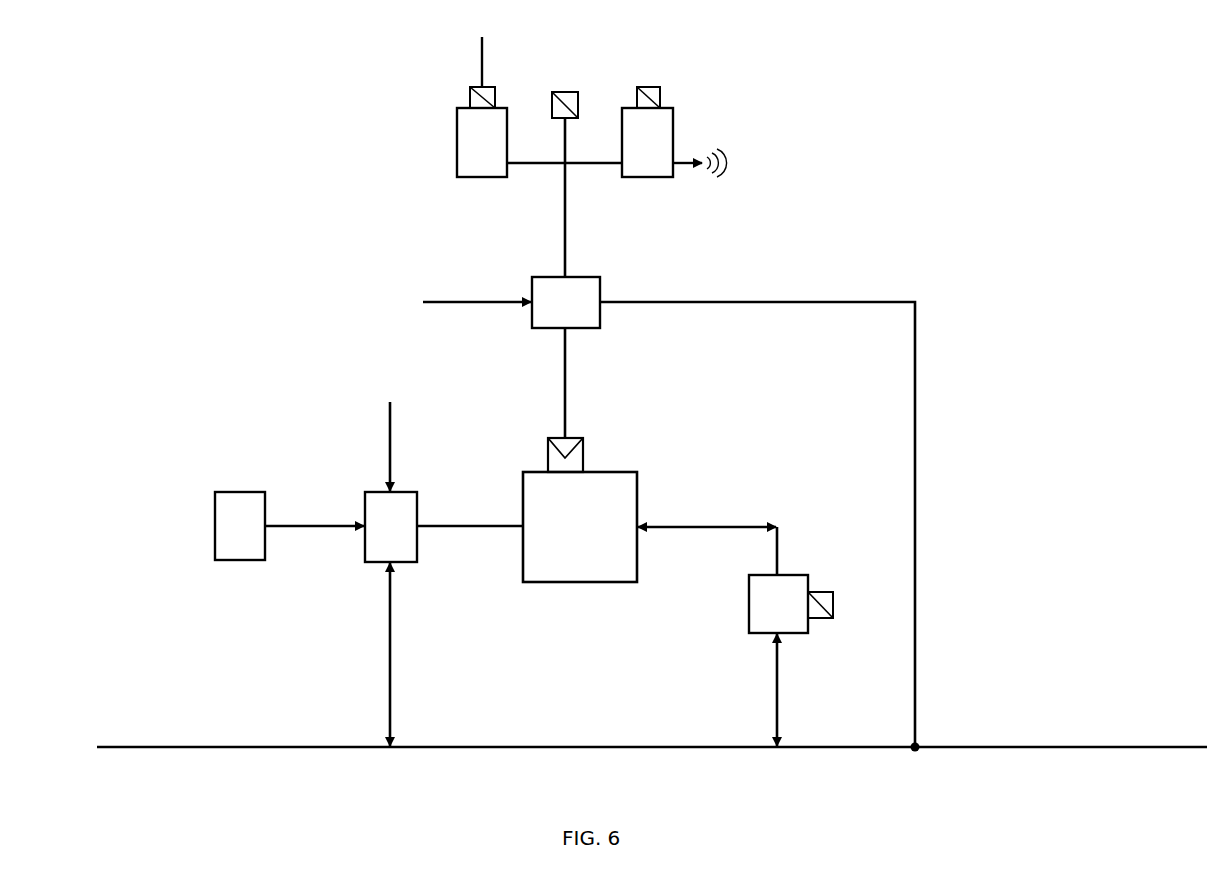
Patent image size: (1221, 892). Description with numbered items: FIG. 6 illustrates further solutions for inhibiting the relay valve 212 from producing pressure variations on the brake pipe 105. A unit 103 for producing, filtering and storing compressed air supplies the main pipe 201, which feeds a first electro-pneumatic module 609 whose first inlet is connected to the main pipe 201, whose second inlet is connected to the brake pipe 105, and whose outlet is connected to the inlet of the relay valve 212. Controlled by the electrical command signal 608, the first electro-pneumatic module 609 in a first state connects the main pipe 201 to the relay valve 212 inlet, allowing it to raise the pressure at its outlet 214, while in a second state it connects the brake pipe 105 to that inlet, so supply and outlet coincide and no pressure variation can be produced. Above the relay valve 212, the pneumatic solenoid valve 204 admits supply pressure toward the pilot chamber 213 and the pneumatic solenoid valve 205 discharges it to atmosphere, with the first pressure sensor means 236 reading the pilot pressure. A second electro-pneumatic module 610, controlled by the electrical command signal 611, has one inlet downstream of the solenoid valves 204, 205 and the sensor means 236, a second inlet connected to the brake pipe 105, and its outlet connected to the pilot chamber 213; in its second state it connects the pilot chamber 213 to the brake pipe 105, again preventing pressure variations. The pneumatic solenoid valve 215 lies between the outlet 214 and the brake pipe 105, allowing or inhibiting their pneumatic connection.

The unit for producing, filtering and storing compressed air 103 is at (243, 505).
The brake pipe 105 is at (1030, 747).
The main pipe 201 is at (295, 525).
The pneumatic solenoid valve 204 is at (467, 140).
The pneumatic solenoid valve 205 is at (662, 142).
The relay valve 212 is at (577, 570).
The pilot chamber 213 is at (582, 462).
The outlet of the relay valve 214 is at (695, 518).
The pneumatic solenoid valve 215 is at (758, 607).
The first pressure sensor means 236 is at (572, 95).
The electrical command signal 608 is at (390, 440).
The first electro-pneumatic module 609 is at (377, 542).
The second electro-pneumatic module 610 is at (580, 288).
The electrical command signal 611 is at (462, 300).